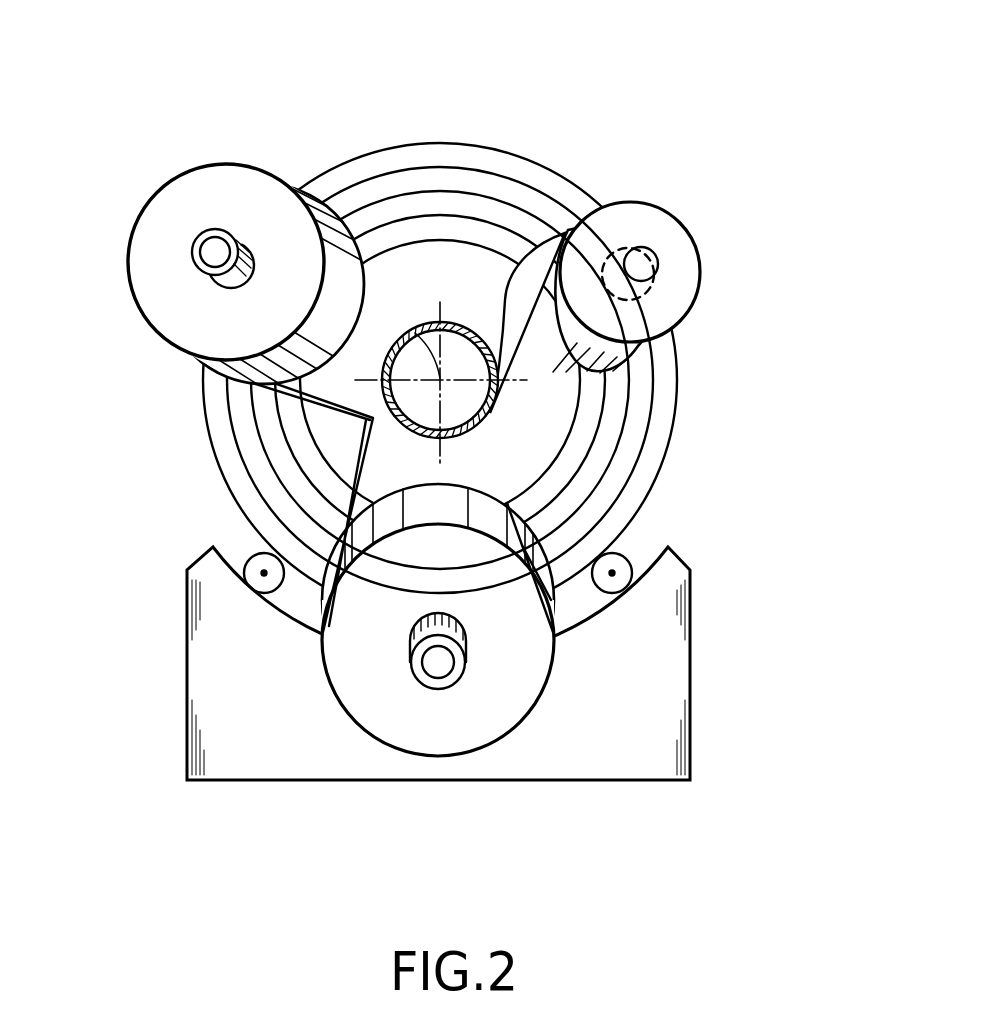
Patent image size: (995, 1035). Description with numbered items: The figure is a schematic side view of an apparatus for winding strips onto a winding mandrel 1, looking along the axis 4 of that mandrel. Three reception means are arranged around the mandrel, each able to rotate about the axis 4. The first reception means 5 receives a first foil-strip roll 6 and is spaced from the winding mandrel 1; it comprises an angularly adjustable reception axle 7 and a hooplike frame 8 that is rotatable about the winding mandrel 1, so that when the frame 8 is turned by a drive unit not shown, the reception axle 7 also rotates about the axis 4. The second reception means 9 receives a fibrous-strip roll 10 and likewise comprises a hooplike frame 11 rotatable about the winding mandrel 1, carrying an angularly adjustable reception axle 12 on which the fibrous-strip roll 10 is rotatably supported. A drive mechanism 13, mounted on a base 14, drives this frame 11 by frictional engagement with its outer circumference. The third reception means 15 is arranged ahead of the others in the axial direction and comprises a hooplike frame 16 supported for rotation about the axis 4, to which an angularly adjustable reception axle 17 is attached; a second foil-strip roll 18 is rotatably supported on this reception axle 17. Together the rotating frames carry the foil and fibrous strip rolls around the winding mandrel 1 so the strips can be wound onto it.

The winding mandrel 1 is at (462, 347).
The axis 4 is at (407, 332).
The first reception means 5 is at (686, 225).
The first foil-strip roll 6 is at (676, 303).
The reception axle 7 is at (650, 248).
The hooplike frame 8 is at (597, 410).
The second reception means 9 is at (434, 671).
The fibrous-strip roll 10 is at (413, 703).
The hooplike frame 11 is at (455, 157).
The reception axle 12 is at (437, 660).
The drive mechanism 13 is at (526, 612).
The base 14 is at (628, 703).
The third reception means 15 is at (202, 193).
The hooplike frame 16 is at (245, 435).
The reception axle 17 is at (215, 255).
The second foil-strip roll 18 is at (175, 208).